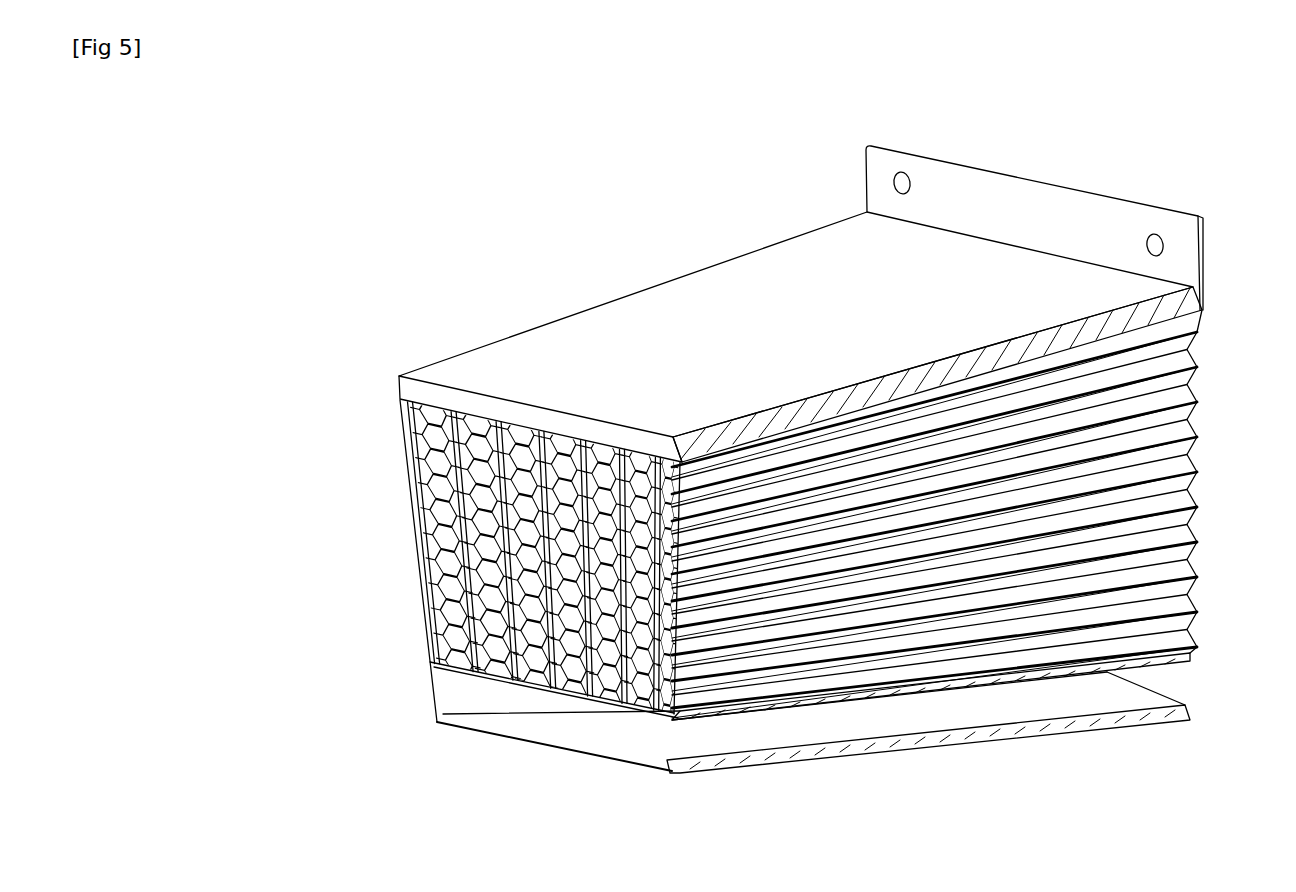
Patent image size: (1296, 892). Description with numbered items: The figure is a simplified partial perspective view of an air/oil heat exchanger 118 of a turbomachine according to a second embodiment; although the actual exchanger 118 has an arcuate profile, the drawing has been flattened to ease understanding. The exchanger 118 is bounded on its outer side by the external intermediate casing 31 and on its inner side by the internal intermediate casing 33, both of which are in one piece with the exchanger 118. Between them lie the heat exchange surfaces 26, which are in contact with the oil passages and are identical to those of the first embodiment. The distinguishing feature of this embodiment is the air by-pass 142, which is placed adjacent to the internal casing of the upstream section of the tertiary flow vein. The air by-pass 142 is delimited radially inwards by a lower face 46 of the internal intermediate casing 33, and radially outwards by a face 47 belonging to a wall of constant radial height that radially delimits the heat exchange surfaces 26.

The exchanger 118 is at (513, 274).
The external intermediate casing 31 is at (986, 349).
The heat exchange surfaces with air 26 is at (406, 406).
The face 47 is at (1180, 672).
The air by-pass 142 is at (470, 694).
The internal intermediate casing 33 is at (1083, 728).
The lower face 46 is at (879, 728).